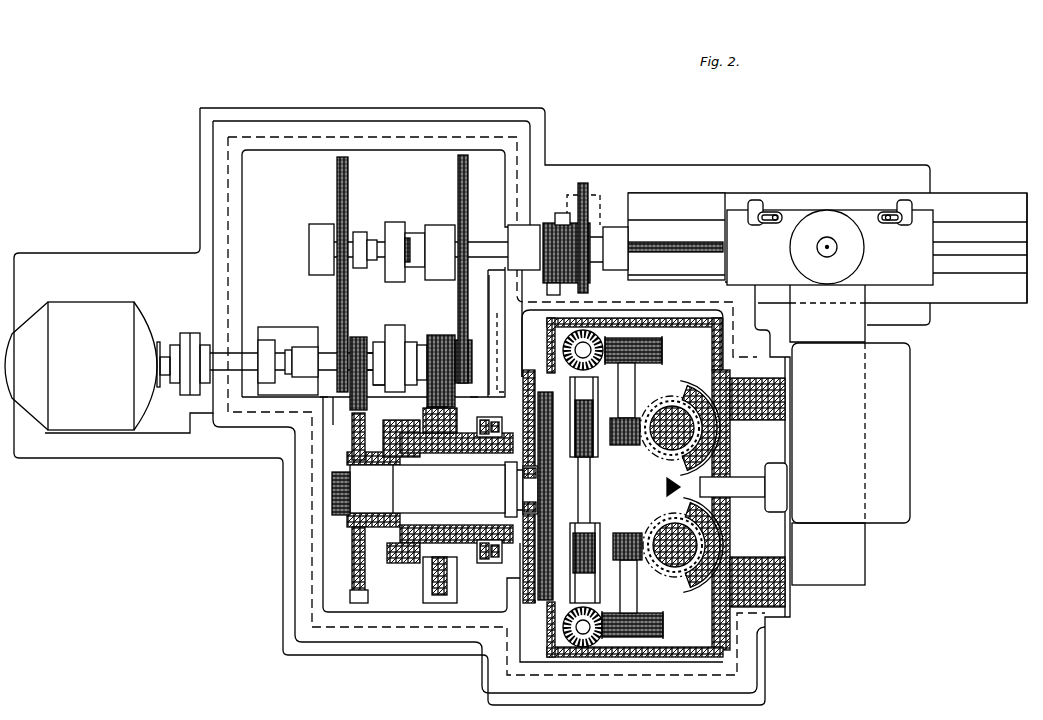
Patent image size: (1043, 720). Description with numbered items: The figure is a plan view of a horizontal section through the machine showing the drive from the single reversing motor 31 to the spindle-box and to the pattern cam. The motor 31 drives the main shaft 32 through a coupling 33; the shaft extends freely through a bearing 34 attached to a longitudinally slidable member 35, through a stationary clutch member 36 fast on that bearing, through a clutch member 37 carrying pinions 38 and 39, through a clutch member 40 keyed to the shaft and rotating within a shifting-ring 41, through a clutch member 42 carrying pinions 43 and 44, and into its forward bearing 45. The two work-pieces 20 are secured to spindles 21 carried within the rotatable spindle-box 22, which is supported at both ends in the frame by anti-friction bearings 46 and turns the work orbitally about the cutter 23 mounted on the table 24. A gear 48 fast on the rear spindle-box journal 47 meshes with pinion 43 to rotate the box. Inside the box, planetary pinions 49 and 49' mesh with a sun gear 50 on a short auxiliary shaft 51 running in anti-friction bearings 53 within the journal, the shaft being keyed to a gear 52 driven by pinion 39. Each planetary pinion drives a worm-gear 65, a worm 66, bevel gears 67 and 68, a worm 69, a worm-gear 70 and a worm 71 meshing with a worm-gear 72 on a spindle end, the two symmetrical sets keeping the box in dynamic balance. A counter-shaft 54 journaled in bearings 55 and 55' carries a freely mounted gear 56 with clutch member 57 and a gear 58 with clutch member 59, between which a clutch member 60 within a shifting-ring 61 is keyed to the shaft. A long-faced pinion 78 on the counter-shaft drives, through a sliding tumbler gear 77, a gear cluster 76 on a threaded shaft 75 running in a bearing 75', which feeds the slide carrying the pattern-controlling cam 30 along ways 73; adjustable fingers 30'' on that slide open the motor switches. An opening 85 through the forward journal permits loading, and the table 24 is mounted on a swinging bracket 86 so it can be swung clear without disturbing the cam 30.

The work-pieces 20 is at (723, 532).
The spindles 21 is at (683, 410).
The spindle-box 22 is at (702, 365).
The cutter 23 is at (667, 488).
The table 24 is at (834, 399).
The pattern-controlling cam 30 is at (830, 247).
The fingers 30'' is at (830, 197).
The motor 31 is at (98, 375).
The main shaft 32 is at (259, 350).
The coupling 33 is at (189, 333).
The bearing 34 is at (305, 330).
The longitudinally slidable member 35 is at (372, 330).
The stationary clutch member 36 is at (317, 400).
The clutch member 37 is at (392, 386).
The pinion 38 is at (338, 415).
The pinion 39 is at (358, 337).
The clutch member 40 is at (378, 342).
The shifting-ring 41 is at (399, 364).
The clutch member 42 is at (420, 342).
The pinion 43 is at (437, 335).
The pinion 44 is at (470, 345).
The forward bearing 45 is at (481, 372).
The anti-friction bearings 46 is at (495, 417).
The rear spindle-box journal 47 is at (452, 455).
The gear 48 is at (467, 394).
The planetary pinion 49 is at (531, 477).
The planetary pinion 49' is at (530, 614).
The sun gear 50 is at (553, 500).
The short auxiliary shaft 51 is at (434, 487).
The gear 52 is at (352, 570).
The anti-friction bearings 53 is at (418, 420).
The counter-shaft 54 is at (481, 243).
The bearings 55 is at (308, 249).
The bearing 55' is at (524, 247).
The gear 56 is at (468, 197).
The clutch member 57 is at (438, 226).
The gear 58 is at (337, 177).
The clutch member 59 is at (357, 232).
The clutch member 60 is at (390, 222).
The shifting-ring 61 is at (408, 233).
The worm-gear 65 is at (582, 491).
The worm 66 is at (603, 433).
The bevel gear 67 is at (600, 387).
The bevel gear 68 is at (600, 340).
The worm 69 is at (568, 346).
The worm-gear 70 is at (660, 352).
The worm 71 is at (636, 418).
The worm-gear 72 is at (673, 477).
The ways 73 is at (988, 268).
The shaft 75 is at (827, 248).
The bearing 75' is at (625, 248).
The gear cluster 76 is at (555, 223).
The sliding tumbler gear 77 is at (583, 183).
The long-faced pinion 78 is at (547, 291).
The opening 85 is at (787, 441).
The swinging bracket 86 is at (834, 330).